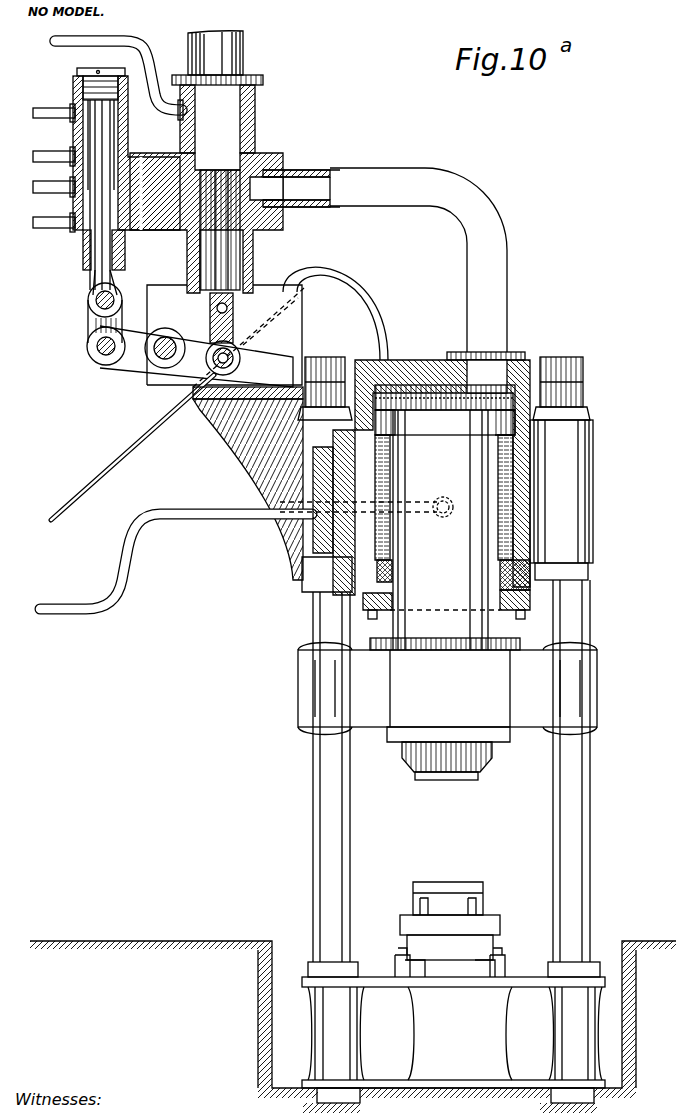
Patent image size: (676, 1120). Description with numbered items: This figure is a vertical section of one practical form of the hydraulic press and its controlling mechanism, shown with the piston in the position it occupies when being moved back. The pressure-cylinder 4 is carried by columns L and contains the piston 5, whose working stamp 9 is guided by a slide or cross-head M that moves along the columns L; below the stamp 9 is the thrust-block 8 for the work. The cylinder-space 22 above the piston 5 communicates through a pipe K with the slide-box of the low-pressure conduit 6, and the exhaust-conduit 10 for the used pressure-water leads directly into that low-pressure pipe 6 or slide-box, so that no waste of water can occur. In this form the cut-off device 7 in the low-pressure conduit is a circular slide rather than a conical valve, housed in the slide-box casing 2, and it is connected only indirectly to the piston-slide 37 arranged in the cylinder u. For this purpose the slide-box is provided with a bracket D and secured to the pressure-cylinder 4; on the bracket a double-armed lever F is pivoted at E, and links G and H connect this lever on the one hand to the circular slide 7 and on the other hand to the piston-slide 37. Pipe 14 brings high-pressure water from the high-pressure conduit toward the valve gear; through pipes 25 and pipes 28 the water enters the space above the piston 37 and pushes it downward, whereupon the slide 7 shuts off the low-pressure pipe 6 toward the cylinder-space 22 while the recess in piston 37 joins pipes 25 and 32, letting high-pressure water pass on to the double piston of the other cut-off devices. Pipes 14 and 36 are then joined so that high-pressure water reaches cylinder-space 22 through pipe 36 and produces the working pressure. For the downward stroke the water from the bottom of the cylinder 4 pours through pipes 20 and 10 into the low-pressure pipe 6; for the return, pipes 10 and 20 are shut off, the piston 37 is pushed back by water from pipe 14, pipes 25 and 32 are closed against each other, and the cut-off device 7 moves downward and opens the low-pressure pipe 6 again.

The exhaust-conduit 10 is at (135, 37).
The low-pressure conduit 6 is at (240, 66).
The valve cylinder 2 is at (252, 135).
The cut-off device 7 is at (226, 246).
The piston-slide 37 is at (104, 136).
The pipe 28 is at (46, 110).
The pipe 25 is at (46, 154).
The pipe 32 is at (50, 184).
The pipe 14 is at (48, 224).
The cylinder u is at (90, 247).
The link H is at (88, 316).
The double-armed lever F is at (92, 352).
The pivot E is at (152, 355).
The link G is at (284, 322).
The bracket D is at (213, 436).
The pipe 36 is at (175, 418).
The pipe 20 is at (208, 516).
The pipe K is at (460, 210).
The pressure-cylinder 4 is at (400, 366).
The cylinder-space 22 is at (410, 390).
The piston 5 is at (445, 423).
The working stamp 9 is at (445, 530).
The cross-head M is at (447, 712).
The columns L is at (342, 812).
The thrust-block 8 is at (450, 884).